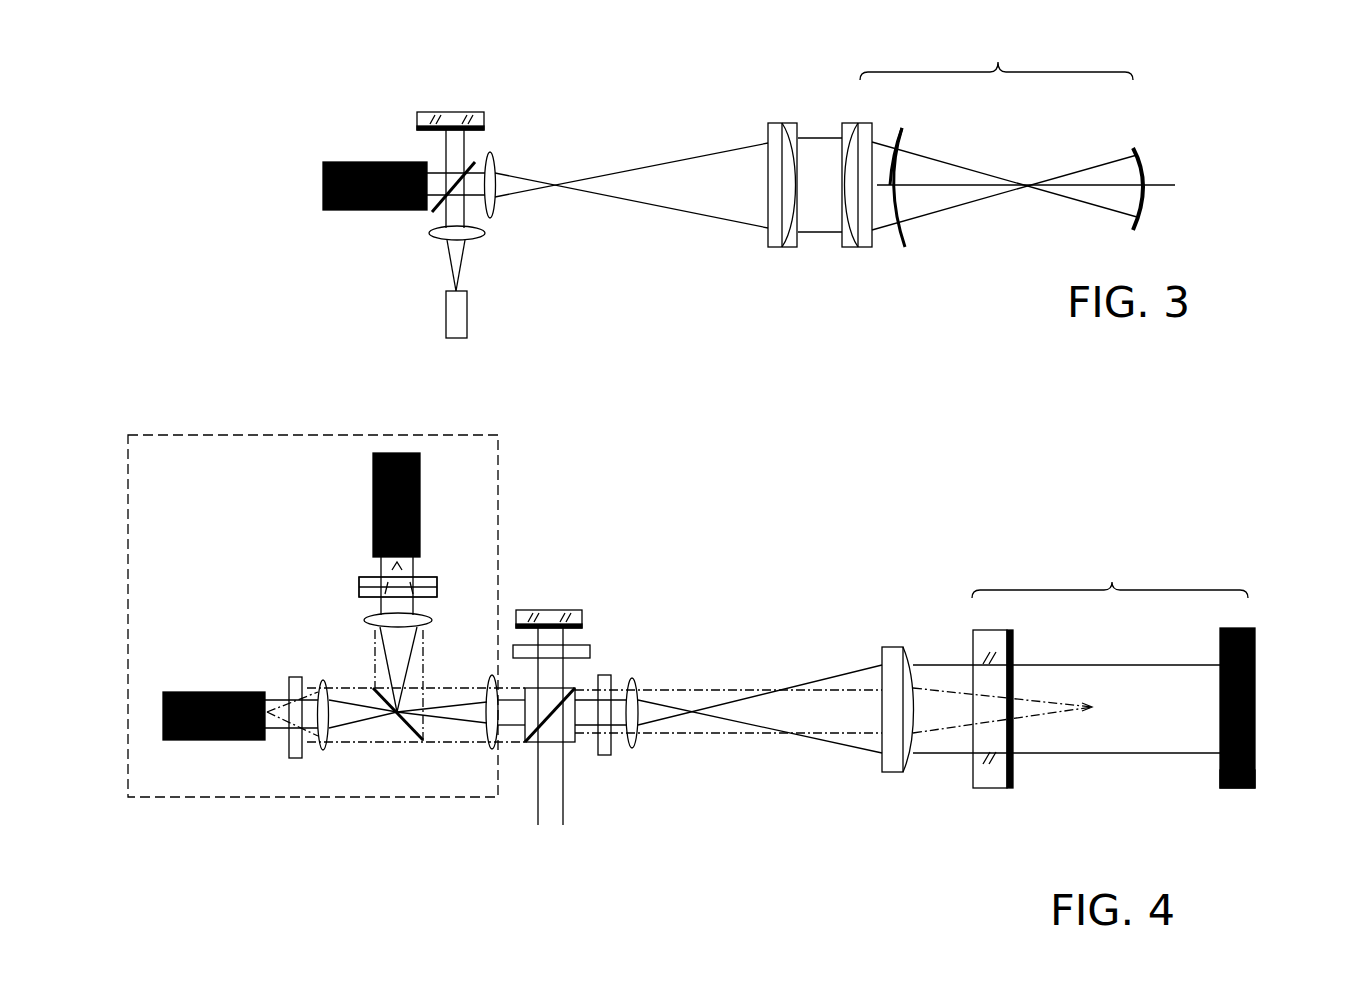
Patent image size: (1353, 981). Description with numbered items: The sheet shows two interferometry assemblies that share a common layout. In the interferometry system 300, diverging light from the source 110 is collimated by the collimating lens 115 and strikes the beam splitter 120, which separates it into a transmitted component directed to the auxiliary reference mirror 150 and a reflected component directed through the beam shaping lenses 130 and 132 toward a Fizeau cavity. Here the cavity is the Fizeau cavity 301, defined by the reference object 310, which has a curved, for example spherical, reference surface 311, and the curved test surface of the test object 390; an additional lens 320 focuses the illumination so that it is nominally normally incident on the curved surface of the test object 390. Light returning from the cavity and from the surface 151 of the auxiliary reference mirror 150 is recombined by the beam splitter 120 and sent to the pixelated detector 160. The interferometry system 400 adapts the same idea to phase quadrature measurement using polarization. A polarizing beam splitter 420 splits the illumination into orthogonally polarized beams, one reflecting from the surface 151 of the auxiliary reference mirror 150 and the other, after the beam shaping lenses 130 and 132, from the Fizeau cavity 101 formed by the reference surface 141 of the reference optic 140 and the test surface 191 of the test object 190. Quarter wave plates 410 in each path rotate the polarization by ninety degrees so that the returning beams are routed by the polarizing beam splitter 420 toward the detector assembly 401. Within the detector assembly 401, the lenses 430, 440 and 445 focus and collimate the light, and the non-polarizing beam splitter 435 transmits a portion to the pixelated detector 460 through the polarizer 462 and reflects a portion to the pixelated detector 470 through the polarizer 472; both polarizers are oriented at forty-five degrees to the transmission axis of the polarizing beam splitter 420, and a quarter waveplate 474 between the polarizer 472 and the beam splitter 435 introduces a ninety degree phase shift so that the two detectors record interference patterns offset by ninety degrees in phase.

In FIG. 3, the interferometry system 300 is at (300, 104).
In FIG. 3, the light source 110 is at (468, 312).
In FIG. 3, the collimating lens 115 is at (480, 240).
In FIG. 3, the beam splitter 120 is at (438, 212).
In FIG. 3, the beam shaping lens 130 is at (490, 157).
In FIG. 4, the beam shaping lens 130 is at (632, 680).
In FIG. 3, the beam shaping lens 132 is at (773, 123).
In FIG. 4, the beam shaping lens 132 is at (882, 647).
In FIG. 3, the auxiliary reference mirror 150 is at (443, 110).
In FIG. 4, the auxiliary reference mirror 150 is at (560, 610).
In FIG. 3, the surface of auxiliary reference mirror 151 is at (425, 131).
In FIG. 4, the surface of auxiliary reference mirror 151 is at (580, 610).
In FIG. 3, the pixelated detector 160 is at (355, 210).
In FIG. 3, the Fizeau cavity 301 is at (996, 56).
In FIG. 3, the reference object 310 is at (903, 238).
In FIG. 3, the reference surface 311 is at (902, 137).
In FIG. 3, the additional lens 320 is at (858, 247).
In FIG. 3, the test object 390 is at (1135, 220).
In FIG. 4, the interferometry system 400 is at (822, 523).
In FIG. 4, the detector assembly 401 is at (202, 797).
In FIG. 4, the quarter wave plates 410 is at (610, 675).
In FIG. 4, the polarizing beam splitter 420 is at (580, 742).
In FIG. 4, the lens 430 is at (492, 750).
In FIG. 4, the non-polarizing beam splitter 435 is at (428, 740).
In FIG. 4, the lens 440 is at (318, 680).
In FIG. 4, the lens 445 is at (368, 620).
In FIG. 4, the pixelated detector 460 is at (225, 740).
In FIG. 4, the polarizer 462 is at (293, 758).
In FIG. 4, the pixelated detector 470 is at (373, 508).
In FIG. 4, the polarizer 472 is at (360, 585).
In FIG. 4, the plate 474 is at (438, 593).
In FIG. 4, the Fizeau cavity 101 is at (1110, 576).
In FIG. 4, the reference optic 140 is at (973, 785).
In FIG. 4, the reference surface 141 is at (1005, 777).
In FIG. 4, the test object 190 is at (1255, 655).
In FIG. 4, the test surface 191 is at (1220, 768).